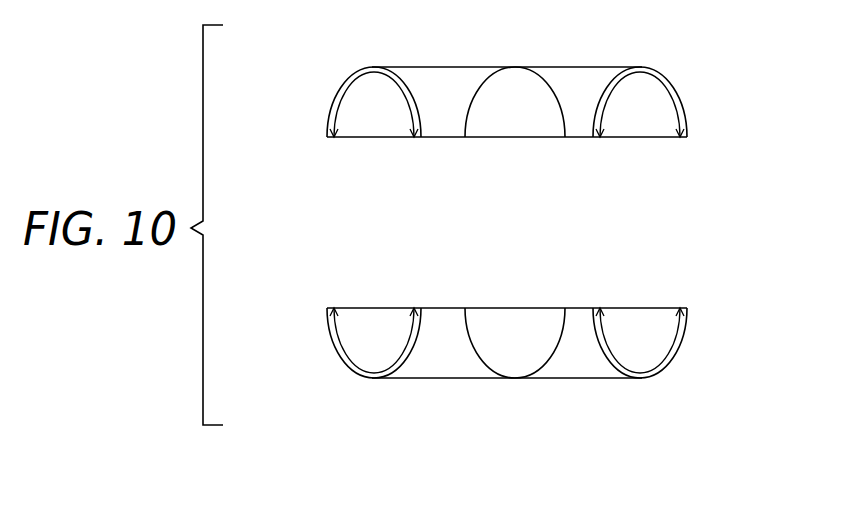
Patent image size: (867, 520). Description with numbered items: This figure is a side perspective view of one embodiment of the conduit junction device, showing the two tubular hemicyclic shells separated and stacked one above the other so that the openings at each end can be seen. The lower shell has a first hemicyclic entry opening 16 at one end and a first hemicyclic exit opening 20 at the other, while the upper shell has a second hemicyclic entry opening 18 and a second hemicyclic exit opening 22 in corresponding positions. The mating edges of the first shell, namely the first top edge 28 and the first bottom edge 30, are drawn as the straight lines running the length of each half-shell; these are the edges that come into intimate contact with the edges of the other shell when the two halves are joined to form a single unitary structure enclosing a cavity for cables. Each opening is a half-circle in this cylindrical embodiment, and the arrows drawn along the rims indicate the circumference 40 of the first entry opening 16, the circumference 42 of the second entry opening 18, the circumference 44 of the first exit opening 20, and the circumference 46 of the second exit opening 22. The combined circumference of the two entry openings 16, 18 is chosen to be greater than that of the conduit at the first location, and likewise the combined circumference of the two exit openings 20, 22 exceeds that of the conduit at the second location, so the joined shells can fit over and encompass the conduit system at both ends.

The first hemicyclic entry opening 16 is at (333, 370).
The second hemicyclic entry opening 18 is at (333, 75).
The first hemicyclic exit opening 20 is at (672, 372).
The second hemicyclic exit opening 22 is at (672, 77).
The first top edge 28 is at (503, 329).
The first bottom edge 30 is at (503, 121).
The circumference of first entry opening 40 is at (343, 343).
The circumference of second entry opening 42 is at (342, 98).
The circumference of first exit opening 44 is at (652, 363).
The circumference of second exit opening 46 is at (657, 82).